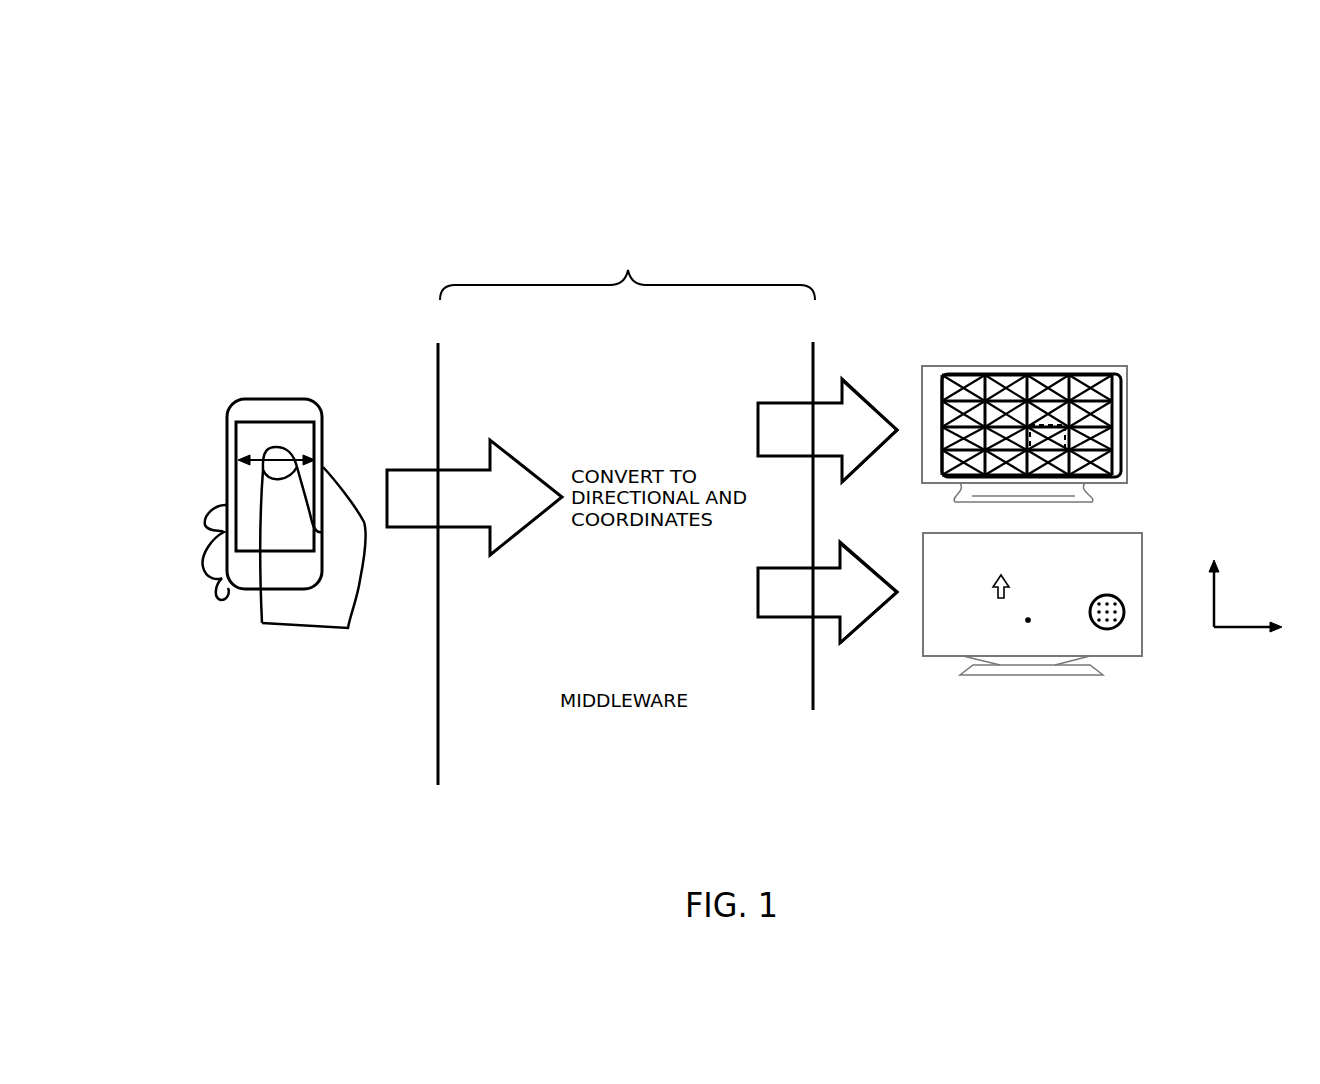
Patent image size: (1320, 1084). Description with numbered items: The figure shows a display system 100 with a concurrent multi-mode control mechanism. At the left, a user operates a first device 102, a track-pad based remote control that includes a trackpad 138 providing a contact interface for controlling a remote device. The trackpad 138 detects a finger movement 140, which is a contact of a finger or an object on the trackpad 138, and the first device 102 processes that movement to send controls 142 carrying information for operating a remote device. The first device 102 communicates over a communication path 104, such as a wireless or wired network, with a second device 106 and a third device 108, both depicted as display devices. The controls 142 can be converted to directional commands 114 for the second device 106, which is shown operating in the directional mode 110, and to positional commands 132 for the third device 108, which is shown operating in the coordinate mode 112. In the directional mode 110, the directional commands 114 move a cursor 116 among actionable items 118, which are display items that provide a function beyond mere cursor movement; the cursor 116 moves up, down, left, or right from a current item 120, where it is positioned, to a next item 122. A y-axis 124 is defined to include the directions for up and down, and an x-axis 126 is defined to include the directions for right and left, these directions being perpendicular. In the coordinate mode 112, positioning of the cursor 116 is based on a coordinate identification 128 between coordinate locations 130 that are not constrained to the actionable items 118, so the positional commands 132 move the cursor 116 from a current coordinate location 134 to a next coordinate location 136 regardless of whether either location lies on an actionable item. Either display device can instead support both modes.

The display system 100 is at (296, 116).
The first device 102 is at (451, 450).
The communication path 104 is at (628, 270).
The second device 106 is at (1000, 417).
The third device 108 is at (1002, 635).
The directional mode 110 is at (780, 403).
The coordinate mode 112 is at (775, 617).
The directional commands 114 is at (853, 405).
The cursor 116 is at (997, 585).
The actionable items 118 is at (1122, 427).
The current item 120 is at (1063, 437).
The next item 122 is at (1048, 470).
The y-axis 124 is at (1217, 600).
The x-axis 126 is at (1220, 628).
The coordinate identification 128 is at (1028, 622).
The coordinate locations 130 is at (1125, 614).
The positional commands 132 is at (857, 617).
The current coordinate location 134 is at (1100, 619).
The next coordinate location 136 is at (1108, 619).
The trackpad 138 is at (247, 444).
The finger movement 140 is at (258, 464).
The controls 142 is at (497, 463).